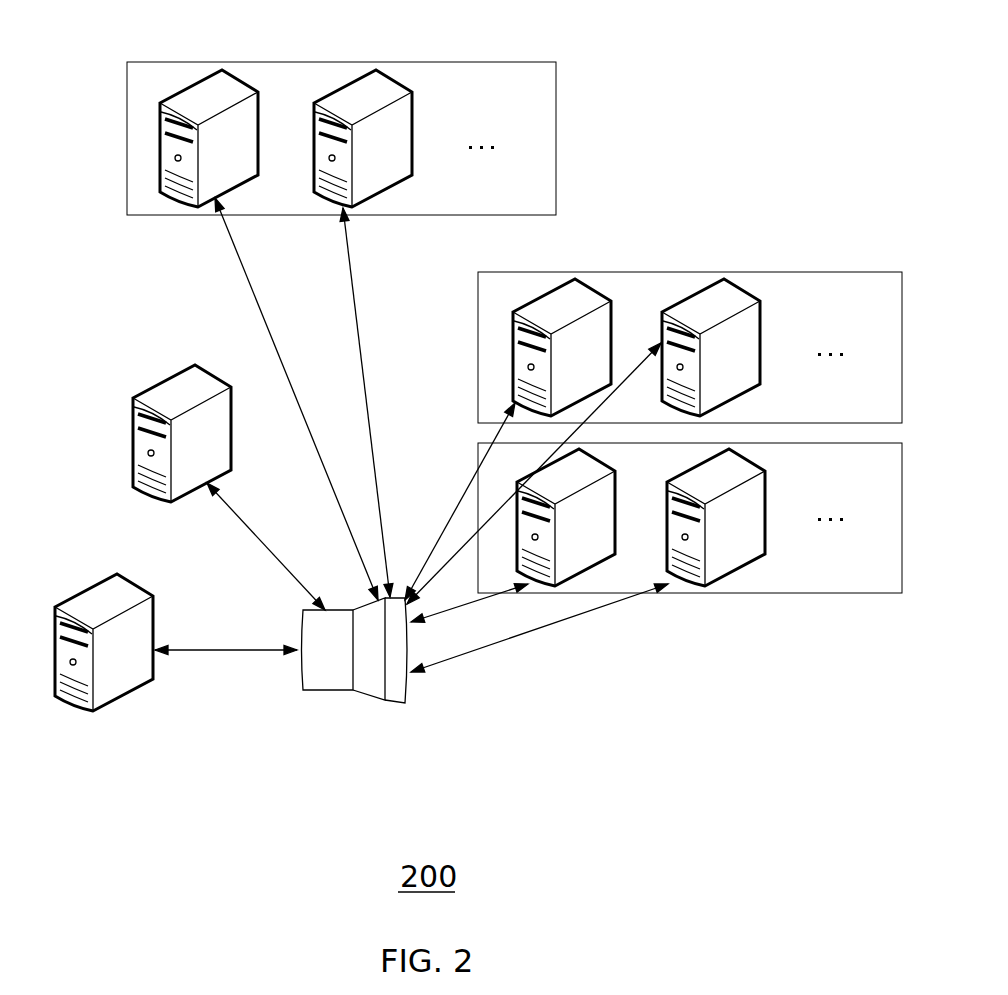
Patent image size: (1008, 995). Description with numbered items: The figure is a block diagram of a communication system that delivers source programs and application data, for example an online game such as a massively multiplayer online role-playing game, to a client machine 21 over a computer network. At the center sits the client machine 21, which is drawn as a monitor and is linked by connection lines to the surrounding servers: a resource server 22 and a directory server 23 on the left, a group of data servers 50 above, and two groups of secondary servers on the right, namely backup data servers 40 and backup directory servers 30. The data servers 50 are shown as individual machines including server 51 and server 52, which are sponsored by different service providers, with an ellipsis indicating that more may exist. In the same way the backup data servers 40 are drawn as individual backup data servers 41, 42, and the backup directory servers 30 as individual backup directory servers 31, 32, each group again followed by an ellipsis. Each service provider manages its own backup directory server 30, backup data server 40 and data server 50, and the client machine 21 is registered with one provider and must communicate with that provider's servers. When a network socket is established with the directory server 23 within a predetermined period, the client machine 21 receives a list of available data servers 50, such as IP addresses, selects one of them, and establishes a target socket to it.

The client machine 21 is at (377, 700).
The resource server 22 is at (93, 580).
The directory server 23 is at (170, 377).
The backup directory server 30 is at (768, 590).
The backup directory server 31 is at (575, 580).
The backup directory server 32 is at (732, 582).
The backup data server 40 is at (783, 272).
The backup data server 41 is at (548, 292).
The backup data server 42 is at (692, 290).
The data servers 50 is at (435, 62).
The server 51 is at (197, 80).
The server 52 is at (340, 88).